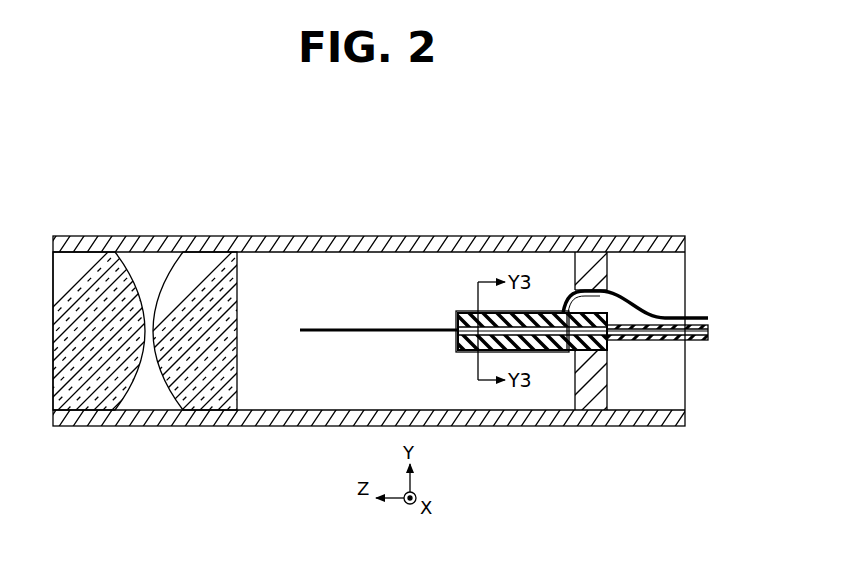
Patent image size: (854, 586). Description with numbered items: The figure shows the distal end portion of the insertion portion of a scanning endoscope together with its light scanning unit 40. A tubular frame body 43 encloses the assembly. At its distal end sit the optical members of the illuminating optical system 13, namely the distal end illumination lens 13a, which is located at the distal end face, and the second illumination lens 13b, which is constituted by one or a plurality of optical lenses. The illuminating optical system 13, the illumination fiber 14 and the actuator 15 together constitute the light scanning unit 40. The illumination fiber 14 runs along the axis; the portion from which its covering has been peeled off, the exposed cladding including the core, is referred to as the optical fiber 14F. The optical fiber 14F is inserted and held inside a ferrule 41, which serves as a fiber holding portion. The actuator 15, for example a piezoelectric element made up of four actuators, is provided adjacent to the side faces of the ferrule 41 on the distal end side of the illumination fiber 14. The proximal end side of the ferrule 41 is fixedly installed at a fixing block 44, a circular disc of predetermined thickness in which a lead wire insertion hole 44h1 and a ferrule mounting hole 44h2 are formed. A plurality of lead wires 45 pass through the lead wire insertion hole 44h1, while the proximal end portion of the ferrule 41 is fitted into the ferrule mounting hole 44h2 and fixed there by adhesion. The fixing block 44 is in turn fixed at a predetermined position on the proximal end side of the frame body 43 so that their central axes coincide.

The frame body 43 is at (340, 236).
The light scanning unit 40 is at (504, 303).
The optical fiber 14F is at (405, 328).
The ferrule 41 is at (458, 312).
The actuator 15 is at (541, 312).
The fixing block 44 is at (621, 338).
The lead wire insertion hole 44h1 is at (615, 302).
The ferrule mounting hole 44h2 is at (608, 318).
The lead wires 45 is at (698, 316).
The illumination fiber 14 is at (692, 344).
The distal end illumination lens 13a is at (80, 388).
The second illumination lens 13b is at (197, 388).
The illuminating optical system 13 is at (217, 371).